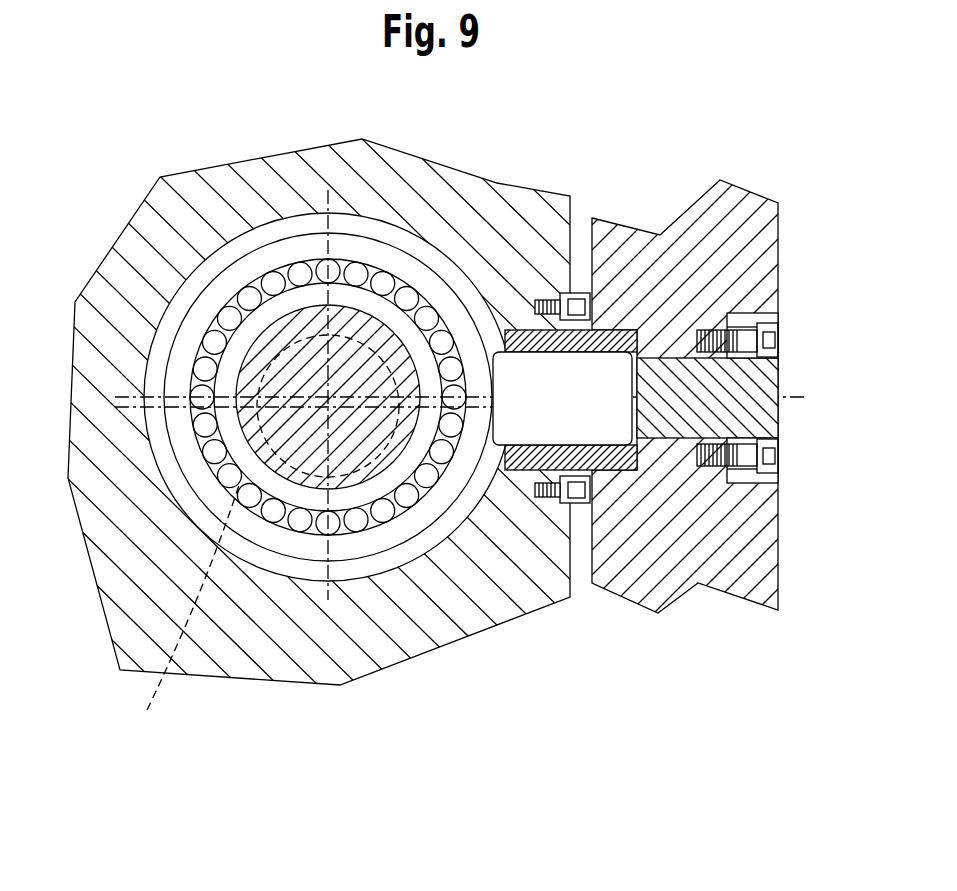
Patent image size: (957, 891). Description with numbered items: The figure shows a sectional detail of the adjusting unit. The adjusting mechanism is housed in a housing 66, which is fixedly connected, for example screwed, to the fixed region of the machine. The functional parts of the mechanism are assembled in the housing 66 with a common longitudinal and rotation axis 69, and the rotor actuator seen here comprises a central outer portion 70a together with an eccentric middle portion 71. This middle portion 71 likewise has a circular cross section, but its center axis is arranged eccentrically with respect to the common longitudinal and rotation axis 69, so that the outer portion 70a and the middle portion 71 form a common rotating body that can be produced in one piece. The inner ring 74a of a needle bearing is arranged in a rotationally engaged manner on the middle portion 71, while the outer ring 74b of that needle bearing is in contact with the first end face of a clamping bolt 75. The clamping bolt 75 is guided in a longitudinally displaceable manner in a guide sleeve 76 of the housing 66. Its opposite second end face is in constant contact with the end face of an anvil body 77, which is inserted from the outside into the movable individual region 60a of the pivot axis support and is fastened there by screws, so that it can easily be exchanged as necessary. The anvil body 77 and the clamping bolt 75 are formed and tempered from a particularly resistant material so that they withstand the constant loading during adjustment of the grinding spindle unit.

The housing 66 is at (303, 653).
The common longitudinal and rotation axis 69 is at (330, 408).
The central outer portion 70a is at (249, 533).
The eccentric middle portion 71 is at (258, 348).
The inner ring 74a is at (293, 297).
The outer ring 74b is at (377, 253).
The clamping bolt 75 is at (575, 372).
The guide sleeve 76 is at (598, 470).
The anvil body 77 is at (765, 430).
The movable individual region 60a is at (728, 366).